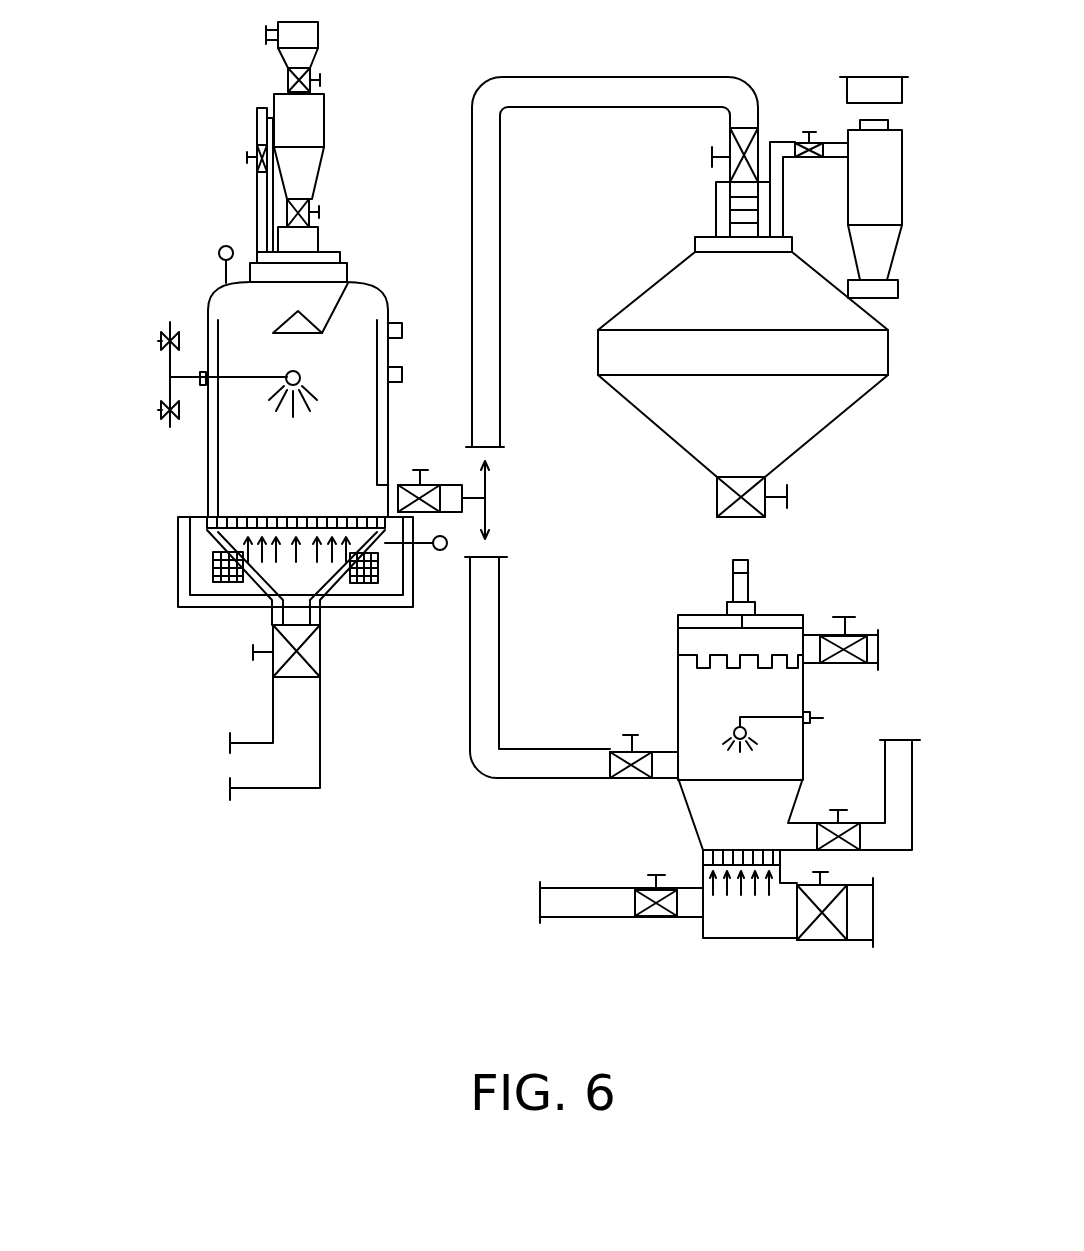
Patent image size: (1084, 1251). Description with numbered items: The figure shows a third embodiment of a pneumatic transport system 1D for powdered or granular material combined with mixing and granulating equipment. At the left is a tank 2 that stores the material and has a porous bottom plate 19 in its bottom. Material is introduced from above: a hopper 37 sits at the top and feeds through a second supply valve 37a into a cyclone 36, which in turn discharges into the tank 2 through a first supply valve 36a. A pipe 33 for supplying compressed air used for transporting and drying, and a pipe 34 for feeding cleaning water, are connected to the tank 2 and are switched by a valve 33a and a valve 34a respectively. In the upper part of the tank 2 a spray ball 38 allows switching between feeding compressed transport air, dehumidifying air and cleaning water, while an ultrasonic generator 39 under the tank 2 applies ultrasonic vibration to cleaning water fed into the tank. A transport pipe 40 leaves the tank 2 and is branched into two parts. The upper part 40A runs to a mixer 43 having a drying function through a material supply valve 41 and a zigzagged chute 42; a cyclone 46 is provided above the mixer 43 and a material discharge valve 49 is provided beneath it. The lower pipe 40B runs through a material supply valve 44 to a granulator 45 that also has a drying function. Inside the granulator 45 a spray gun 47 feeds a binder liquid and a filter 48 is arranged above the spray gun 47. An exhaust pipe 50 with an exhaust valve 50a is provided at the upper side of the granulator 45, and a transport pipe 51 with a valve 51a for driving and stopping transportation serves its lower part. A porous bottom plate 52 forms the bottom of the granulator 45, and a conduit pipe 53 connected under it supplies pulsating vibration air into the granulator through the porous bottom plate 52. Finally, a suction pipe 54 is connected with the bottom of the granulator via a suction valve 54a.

The pneumatic transport system 1D is at (176, 165).
The tank 2 is at (392, 392).
The porous bottom plate 19 is at (313, 515).
The pipe 33 is at (170, 362).
The valve 33a is at (163, 336).
The pipe 34 is at (170, 388).
The valve 34a is at (166, 424).
The cyclone 36 is at (317, 180).
The first supply valve 36a is at (317, 212).
The hopper 37 is at (323, 38).
The second supply valve 37a is at (322, 80).
The spray ball 38 is at (302, 377).
The ultrasonic generator 39 is at (362, 585).
The transport pipe 40 is at (446, 484).
The upper part of transport pipe 40A is at (502, 207).
The lower pipe 40B is at (499, 648).
The material supply valve 41 is at (712, 157).
The zigzagged chute 42 is at (743, 203).
The mixer 43 is at (678, 457).
The material supply valve 44 is at (632, 735).
The granulator 45 is at (812, 738).
The cyclone 46 is at (903, 187).
The spray gun 47 is at (735, 732).
The filter 48 is at (733, 668).
The material discharge valve 49 is at (760, 513).
The exhaust pipe 50 is at (872, 636).
The exhaust valve 50a is at (862, 635).
The transport pipe 51 is at (887, 852).
The valve 51a is at (853, 822).
The porous bottom plate 52 is at (727, 848).
The conduit pipe 53 is at (617, 920).
The suction pipe 54 is at (857, 942).
The suction valve 54a is at (813, 940).